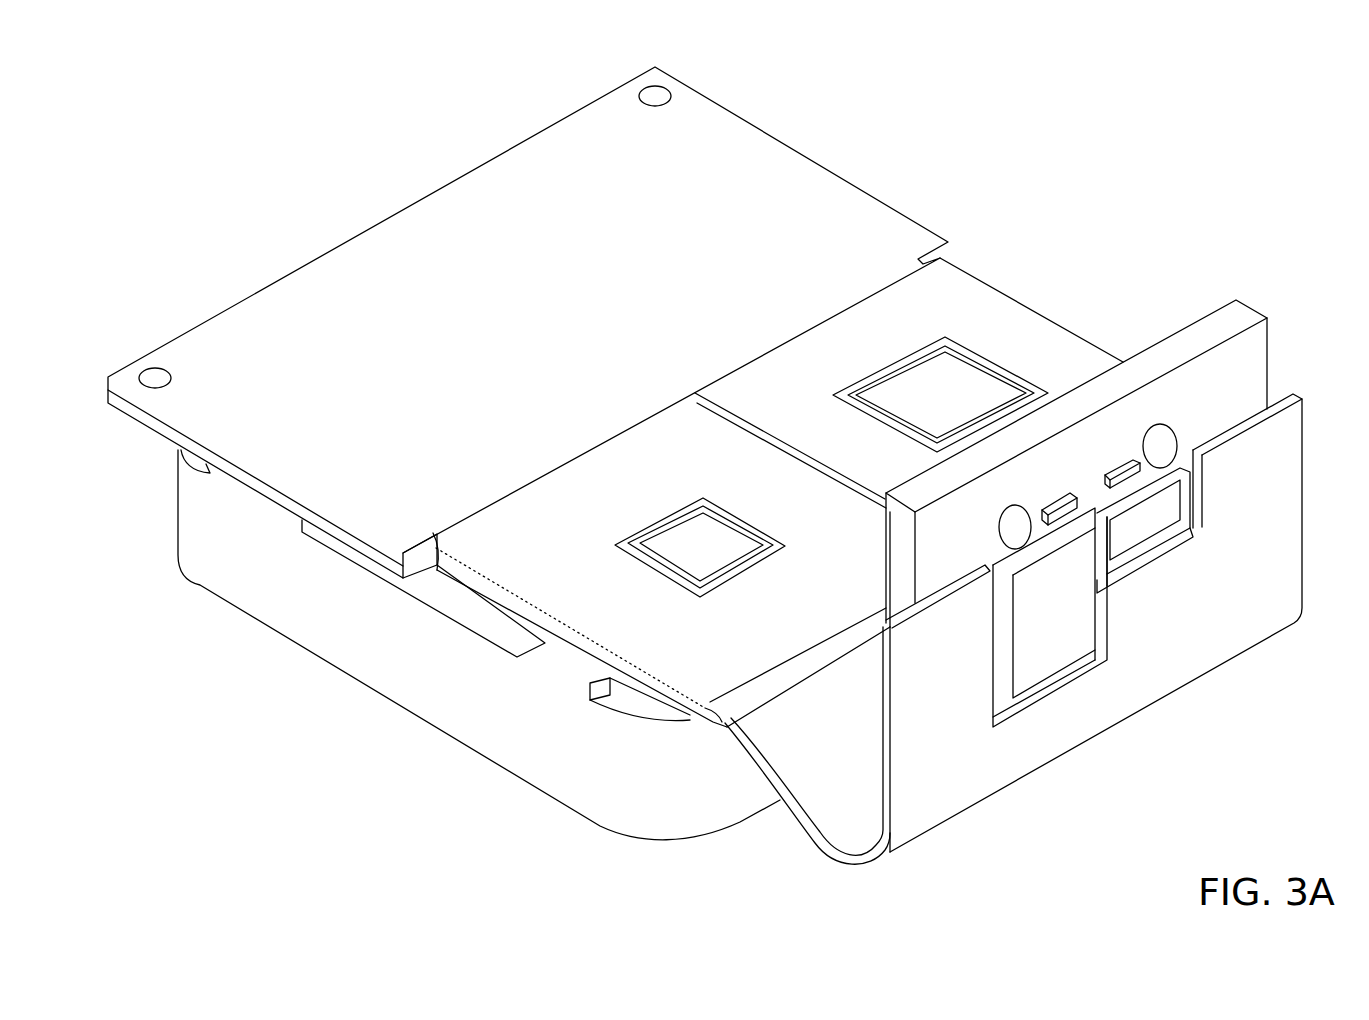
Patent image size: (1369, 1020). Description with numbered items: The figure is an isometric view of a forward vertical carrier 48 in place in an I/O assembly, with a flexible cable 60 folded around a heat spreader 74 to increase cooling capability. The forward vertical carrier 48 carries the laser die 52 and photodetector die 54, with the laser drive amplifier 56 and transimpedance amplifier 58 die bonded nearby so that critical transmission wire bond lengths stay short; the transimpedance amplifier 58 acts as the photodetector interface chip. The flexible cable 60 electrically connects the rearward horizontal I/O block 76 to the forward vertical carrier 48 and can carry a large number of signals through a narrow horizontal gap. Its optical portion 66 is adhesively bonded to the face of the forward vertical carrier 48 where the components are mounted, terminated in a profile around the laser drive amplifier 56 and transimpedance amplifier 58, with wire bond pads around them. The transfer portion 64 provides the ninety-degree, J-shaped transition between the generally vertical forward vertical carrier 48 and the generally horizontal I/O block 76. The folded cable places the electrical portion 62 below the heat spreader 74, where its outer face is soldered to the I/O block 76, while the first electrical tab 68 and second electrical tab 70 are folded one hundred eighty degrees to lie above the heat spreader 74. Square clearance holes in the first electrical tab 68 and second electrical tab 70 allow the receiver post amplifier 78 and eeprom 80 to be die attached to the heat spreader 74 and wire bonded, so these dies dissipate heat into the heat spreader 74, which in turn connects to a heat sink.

The forward vertical carrier 48 is at (1280, 302).
The laser die 52 is at (1062, 490).
The photodetector die 54 is at (1130, 450).
The laser drive amplifier (LDA) 56 is at (1050, 640).
The transimpedance amplifier (TIA) 58 is at (1145, 512).
The flexible cable 60 is at (1255, 662).
The electrical portion 62 is at (128, 415).
The transfer portion 64 is at (847, 827).
The optical portion 66 is at (940, 760).
The first electrical tab 68 is at (713, 648).
The second electrical tab 70 is at (952, 295).
The heat spreader 74 is at (510, 260).
The rearward horizontal I/O block 76 is at (350, 633).
The receiver post amplifier 78 is at (983, 402).
The eeprom 80 is at (693, 545).